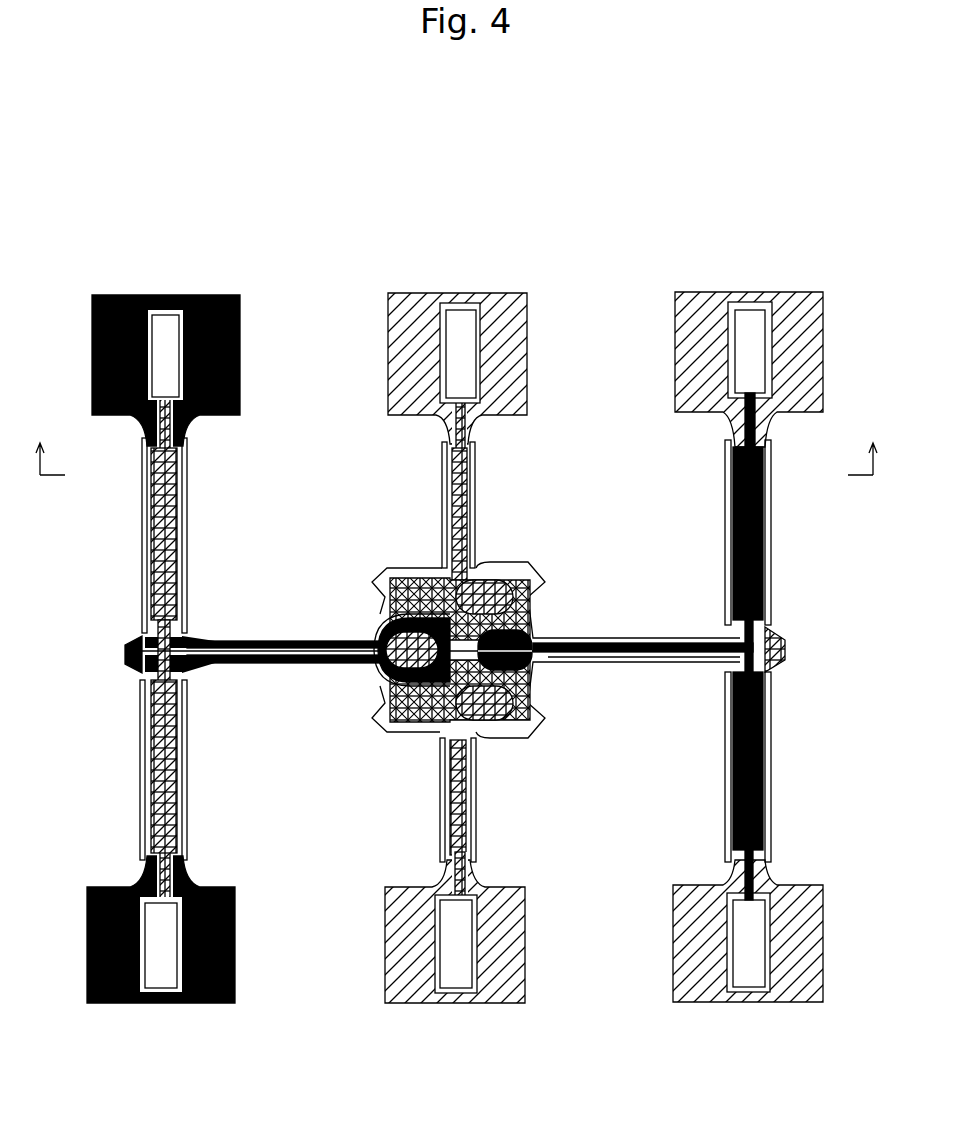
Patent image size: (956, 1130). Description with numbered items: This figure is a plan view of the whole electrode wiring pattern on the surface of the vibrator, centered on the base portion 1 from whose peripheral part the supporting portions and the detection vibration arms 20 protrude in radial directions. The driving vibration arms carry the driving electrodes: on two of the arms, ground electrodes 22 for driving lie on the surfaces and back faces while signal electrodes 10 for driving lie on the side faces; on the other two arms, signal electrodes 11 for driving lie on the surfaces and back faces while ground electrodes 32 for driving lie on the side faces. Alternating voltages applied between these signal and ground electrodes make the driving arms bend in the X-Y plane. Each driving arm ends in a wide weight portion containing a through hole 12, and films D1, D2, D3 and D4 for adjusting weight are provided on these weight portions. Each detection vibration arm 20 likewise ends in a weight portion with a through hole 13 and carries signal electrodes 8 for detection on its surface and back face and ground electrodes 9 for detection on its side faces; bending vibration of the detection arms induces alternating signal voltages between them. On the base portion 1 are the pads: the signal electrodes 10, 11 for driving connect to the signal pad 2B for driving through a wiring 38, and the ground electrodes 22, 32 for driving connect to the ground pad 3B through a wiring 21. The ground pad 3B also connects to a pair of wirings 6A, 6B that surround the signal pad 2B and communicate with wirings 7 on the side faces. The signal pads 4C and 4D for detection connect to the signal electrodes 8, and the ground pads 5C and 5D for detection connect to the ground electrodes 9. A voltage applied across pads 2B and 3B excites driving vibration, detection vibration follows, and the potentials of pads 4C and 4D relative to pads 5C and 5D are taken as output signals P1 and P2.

The base portion 1 is at (497, 566).
The signal pad for driving 2B is at (380, 625).
The ground pad for driving 3B is at (525, 635).
The signal pad for detection 4C is at (495, 583).
The signal pad for detection 4D is at (490, 720).
The ground pad for detection 5C is at (420, 580).
The ground pad for detection 5D is at (425, 710).
The wiring 6A is at (385, 625).
The wiring 6B is at (385, 690).
The wiring 7 is at (360, 630).
The signal electrode for detection 8 is at (468, 490).
The ground electrode for detection 9 is at (475, 800).
The signal electrode for driving 10 is at (772, 478).
The signal electrode for driving 11 is at (165, 548).
The through hole 12 is at (172, 320).
The through hole 13 is at (463, 315).
The detection vibration arm 20 is at (448, 473).
The wiring 21 is at (637, 665).
The ground electrode for driving 22 is at (763, 515).
The ground electrode for driving 32 is at (187, 493).
The wiring 38 is at (293, 665).
The film for adjusting weight D1 is at (118, 296).
The film for adjusting weight D2 is at (125, 1005).
The film for adjusting weight D3 is at (775, 305).
The film for adjusting weight D4 is at (790, 1005).
The output signal P1 is at (457, 322).
The output signal P2 is at (455, 962).